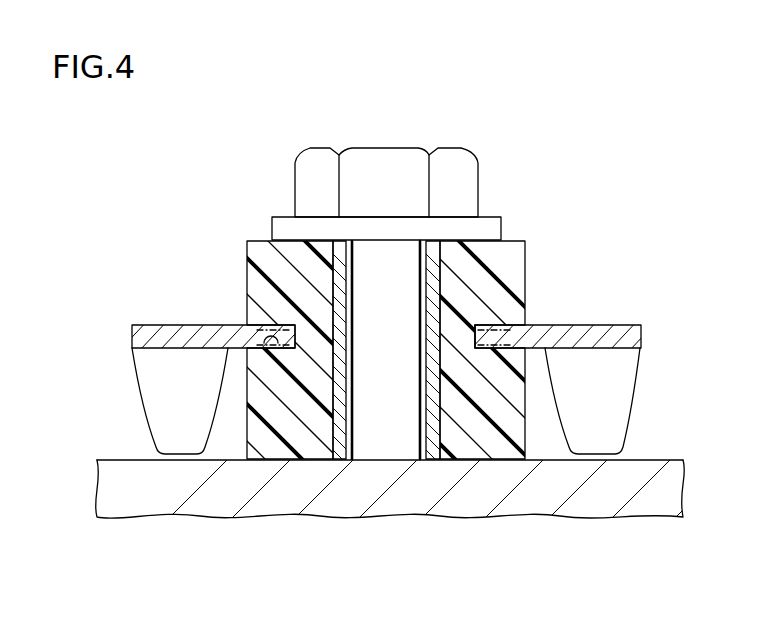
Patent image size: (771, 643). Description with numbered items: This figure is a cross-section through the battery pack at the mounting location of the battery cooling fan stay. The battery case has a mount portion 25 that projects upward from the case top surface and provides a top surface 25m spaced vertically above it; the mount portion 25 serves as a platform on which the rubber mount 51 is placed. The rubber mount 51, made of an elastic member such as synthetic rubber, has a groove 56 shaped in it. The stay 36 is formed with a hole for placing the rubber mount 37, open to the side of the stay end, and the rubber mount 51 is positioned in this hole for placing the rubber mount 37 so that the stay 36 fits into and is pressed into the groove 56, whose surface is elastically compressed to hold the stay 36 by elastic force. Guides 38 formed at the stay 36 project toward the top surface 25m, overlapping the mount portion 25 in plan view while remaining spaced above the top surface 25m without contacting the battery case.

The mount portion 25 is at (405, 493).
The top surface 25m is at (114, 458).
The stay 36 is at (173, 335).
The hole for placing the rubber mount 37 is at (470, 324).
The guides 38 is at (160, 380).
The rubber mount 51 is at (493, 266).
The groove 56 is at (275, 348).